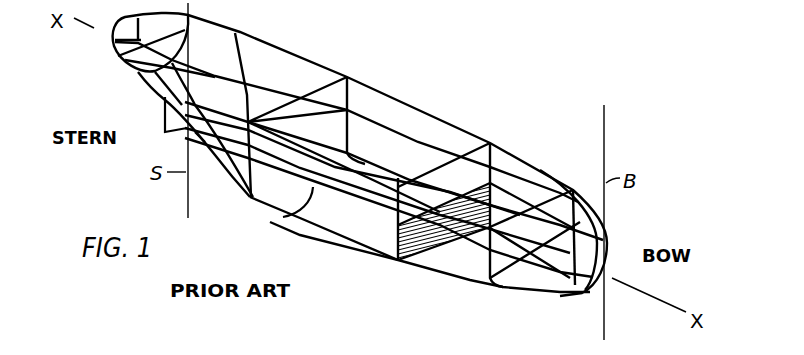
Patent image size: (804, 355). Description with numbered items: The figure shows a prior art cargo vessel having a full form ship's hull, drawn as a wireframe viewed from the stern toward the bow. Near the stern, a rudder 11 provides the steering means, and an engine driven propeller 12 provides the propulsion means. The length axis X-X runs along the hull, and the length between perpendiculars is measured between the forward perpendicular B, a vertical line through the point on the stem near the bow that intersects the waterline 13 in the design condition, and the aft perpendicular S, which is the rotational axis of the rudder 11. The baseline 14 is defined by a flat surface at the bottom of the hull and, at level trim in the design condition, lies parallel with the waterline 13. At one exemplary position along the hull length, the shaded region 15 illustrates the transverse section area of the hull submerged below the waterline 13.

The rudder 11 is at (165, 118).
The engine driven propeller 12 is at (207, 131).
The waterline 13 is at (420, 141).
The baseline 14 is at (283, 217).
The shaded region 15 is at (425, 258).